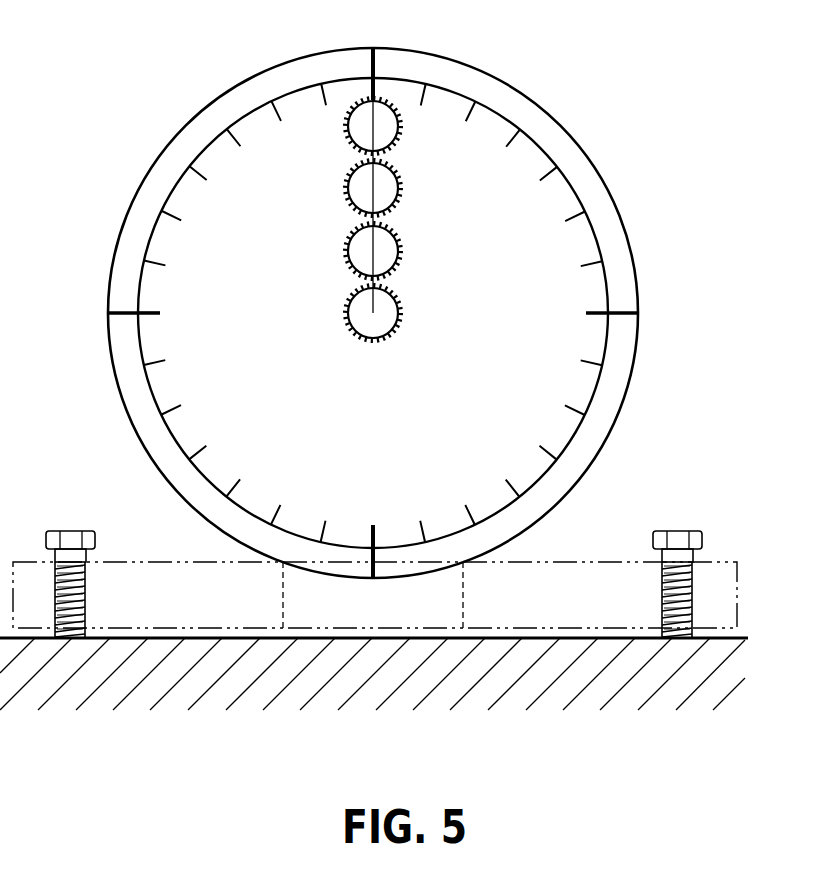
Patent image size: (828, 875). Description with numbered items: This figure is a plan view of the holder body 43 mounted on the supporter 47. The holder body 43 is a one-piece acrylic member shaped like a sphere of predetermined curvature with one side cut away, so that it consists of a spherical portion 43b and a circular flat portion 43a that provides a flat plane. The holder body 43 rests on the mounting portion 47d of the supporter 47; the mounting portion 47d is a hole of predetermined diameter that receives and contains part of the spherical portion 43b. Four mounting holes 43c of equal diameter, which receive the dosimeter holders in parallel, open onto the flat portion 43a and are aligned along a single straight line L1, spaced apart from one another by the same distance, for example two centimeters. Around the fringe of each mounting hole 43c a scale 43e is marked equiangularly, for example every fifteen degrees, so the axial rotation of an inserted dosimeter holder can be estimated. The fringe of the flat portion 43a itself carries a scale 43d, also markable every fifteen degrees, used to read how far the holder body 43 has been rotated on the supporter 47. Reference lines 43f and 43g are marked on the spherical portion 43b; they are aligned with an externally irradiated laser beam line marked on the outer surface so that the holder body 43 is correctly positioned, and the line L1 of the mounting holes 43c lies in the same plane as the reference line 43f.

The holder body 43 is at (377, 289).
The flat portion 43a is at (528, 245).
The spherical portion 43b is at (433, 73).
The mounting holes 43c is at (362, 127).
The scale 43d is at (202, 172).
The scale 43e is at (398, 183).
The reference line 43f is at (363, 51).
The reference line 43g is at (615, 312).
The straight line L1 is at (373, 192).
The supporter 47 is at (192, 632).
The mounting portion 47d is at (283, 607).